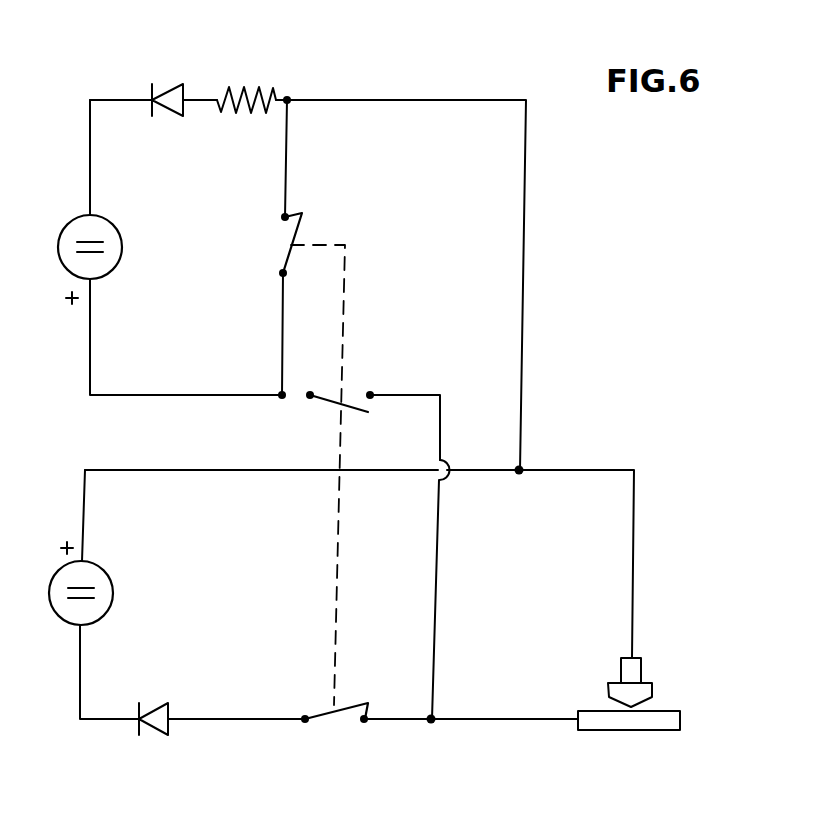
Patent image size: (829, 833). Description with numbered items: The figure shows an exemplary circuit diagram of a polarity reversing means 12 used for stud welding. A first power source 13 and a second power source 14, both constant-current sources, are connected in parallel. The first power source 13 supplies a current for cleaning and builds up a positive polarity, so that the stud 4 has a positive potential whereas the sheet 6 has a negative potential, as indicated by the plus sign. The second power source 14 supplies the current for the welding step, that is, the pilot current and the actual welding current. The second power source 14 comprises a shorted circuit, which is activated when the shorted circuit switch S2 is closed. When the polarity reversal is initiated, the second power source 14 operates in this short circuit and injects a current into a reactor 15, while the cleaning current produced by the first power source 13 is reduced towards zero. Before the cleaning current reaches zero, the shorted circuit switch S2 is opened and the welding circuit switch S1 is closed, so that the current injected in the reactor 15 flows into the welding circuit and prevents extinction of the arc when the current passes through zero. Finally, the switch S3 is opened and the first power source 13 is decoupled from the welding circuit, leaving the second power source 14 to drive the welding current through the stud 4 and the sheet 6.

The stud 4 is at (633, 670).
The sheet 6 is at (670, 700).
The polarity reversing means 12 is at (540, 232).
The first power source 13 is at (106, 611).
The second power source 14 is at (113, 271).
The reactor 15 is at (259, 74).
The welding circuit switch S1 is at (359, 425).
The shorted circuit switch S2 is at (277, 304).
The switch S3 is at (439, 727).